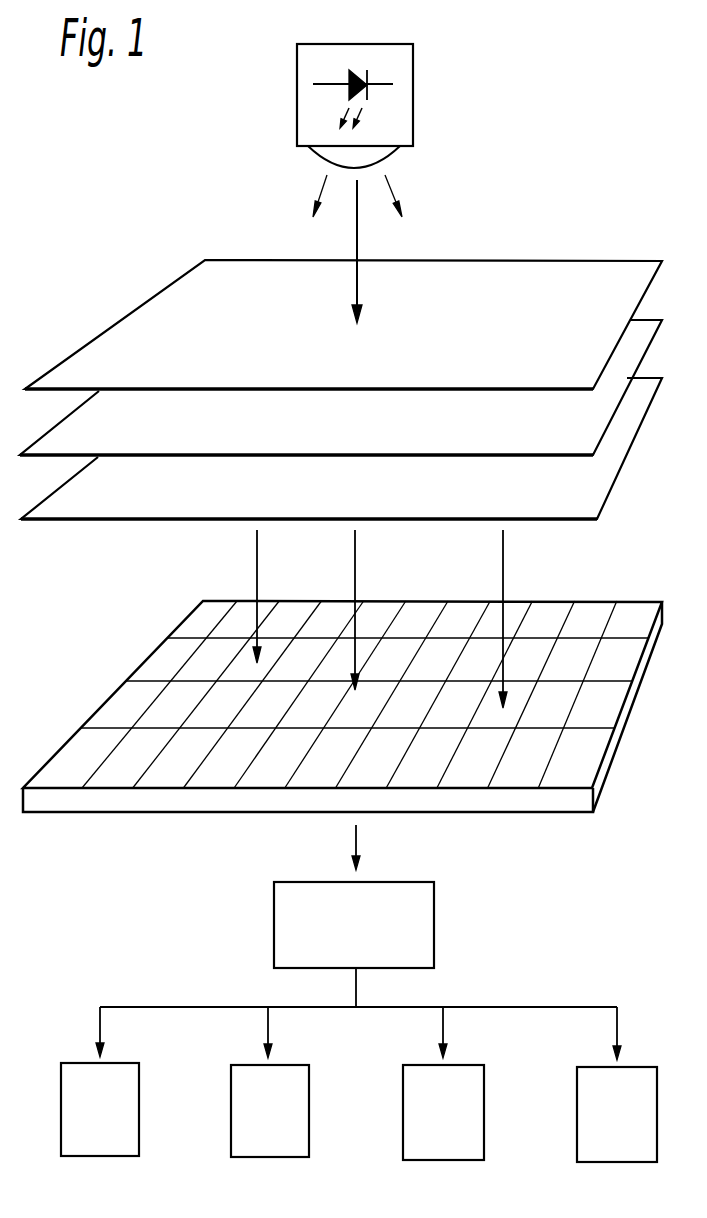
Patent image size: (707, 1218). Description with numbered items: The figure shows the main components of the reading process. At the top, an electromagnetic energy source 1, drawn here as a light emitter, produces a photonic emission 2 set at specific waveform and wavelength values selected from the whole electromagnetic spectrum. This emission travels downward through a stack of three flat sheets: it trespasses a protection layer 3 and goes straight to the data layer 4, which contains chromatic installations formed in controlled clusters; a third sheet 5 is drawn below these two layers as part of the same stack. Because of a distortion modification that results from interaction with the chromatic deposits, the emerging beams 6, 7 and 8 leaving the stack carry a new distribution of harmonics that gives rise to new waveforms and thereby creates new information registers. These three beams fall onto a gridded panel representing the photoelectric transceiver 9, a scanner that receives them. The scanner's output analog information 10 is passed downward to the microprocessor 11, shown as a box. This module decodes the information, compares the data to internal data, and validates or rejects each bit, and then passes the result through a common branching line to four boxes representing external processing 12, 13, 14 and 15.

The electromagnetic energy source 1 is at (405, 95).
The photonic emission 2 is at (357, 234).
The protection layer 3 is at (220, 283).
The data layer 4 is at (583, 420).
The third filter layer 5 is at (177, 500).
The emerging beam 6 is at (250, 566).
The emerging beam 7 is at (362, 565).
The emerging beam 8 is at (512, 565).
The photoelectric transceiver 9 is at (605, 775).
The output analog information 10 is at (360, 843).
The microprocessor 11 is at (354, 925).
The external processing 12 is at (100, 1081).
The external processing 13 is at (270, 1082).
The external processing 14 is at (443, 1083).
The external processing 15 is at (617, 1084).